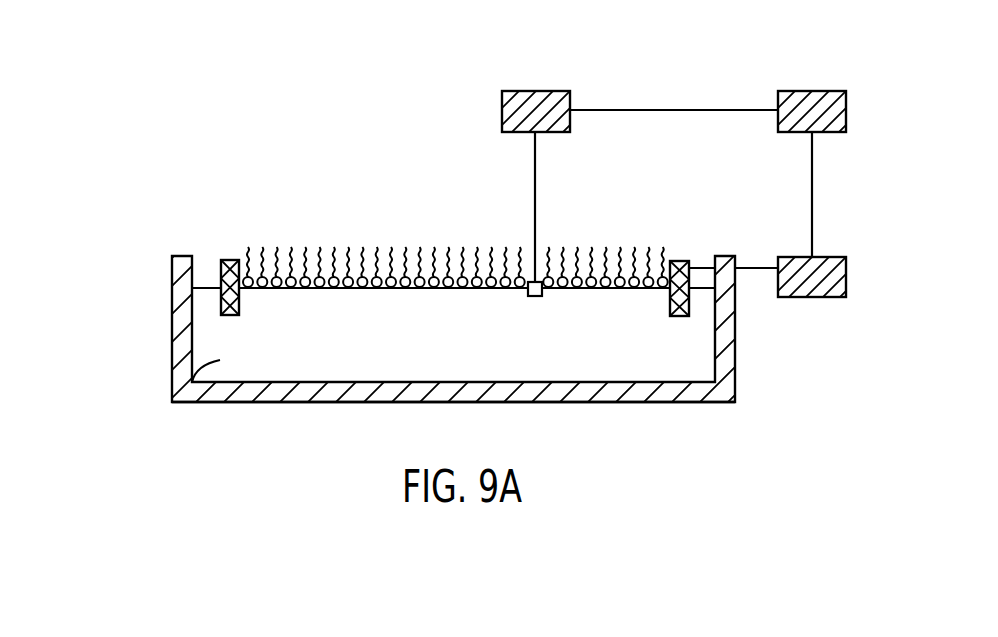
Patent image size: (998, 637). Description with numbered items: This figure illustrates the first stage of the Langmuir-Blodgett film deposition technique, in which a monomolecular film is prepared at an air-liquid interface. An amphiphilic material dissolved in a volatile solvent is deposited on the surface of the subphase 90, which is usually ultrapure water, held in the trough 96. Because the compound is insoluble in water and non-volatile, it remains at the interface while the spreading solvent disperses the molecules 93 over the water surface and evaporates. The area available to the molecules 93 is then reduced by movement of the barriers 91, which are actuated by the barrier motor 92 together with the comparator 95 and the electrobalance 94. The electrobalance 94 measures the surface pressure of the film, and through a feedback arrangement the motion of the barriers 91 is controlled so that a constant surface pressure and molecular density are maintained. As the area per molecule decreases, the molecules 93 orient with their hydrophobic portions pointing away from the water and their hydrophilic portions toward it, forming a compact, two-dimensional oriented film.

The subphase 90 is at (172, 402).
The barriers 91 is at (233, 262).
The barrier motor 92 is at (812, 297).
The molecules 93 is at (353, 253).
The electrobalance 94 is at (538, 91).
The comparator 95 is at (818, 91).
The trough 96 is at (737, 393).